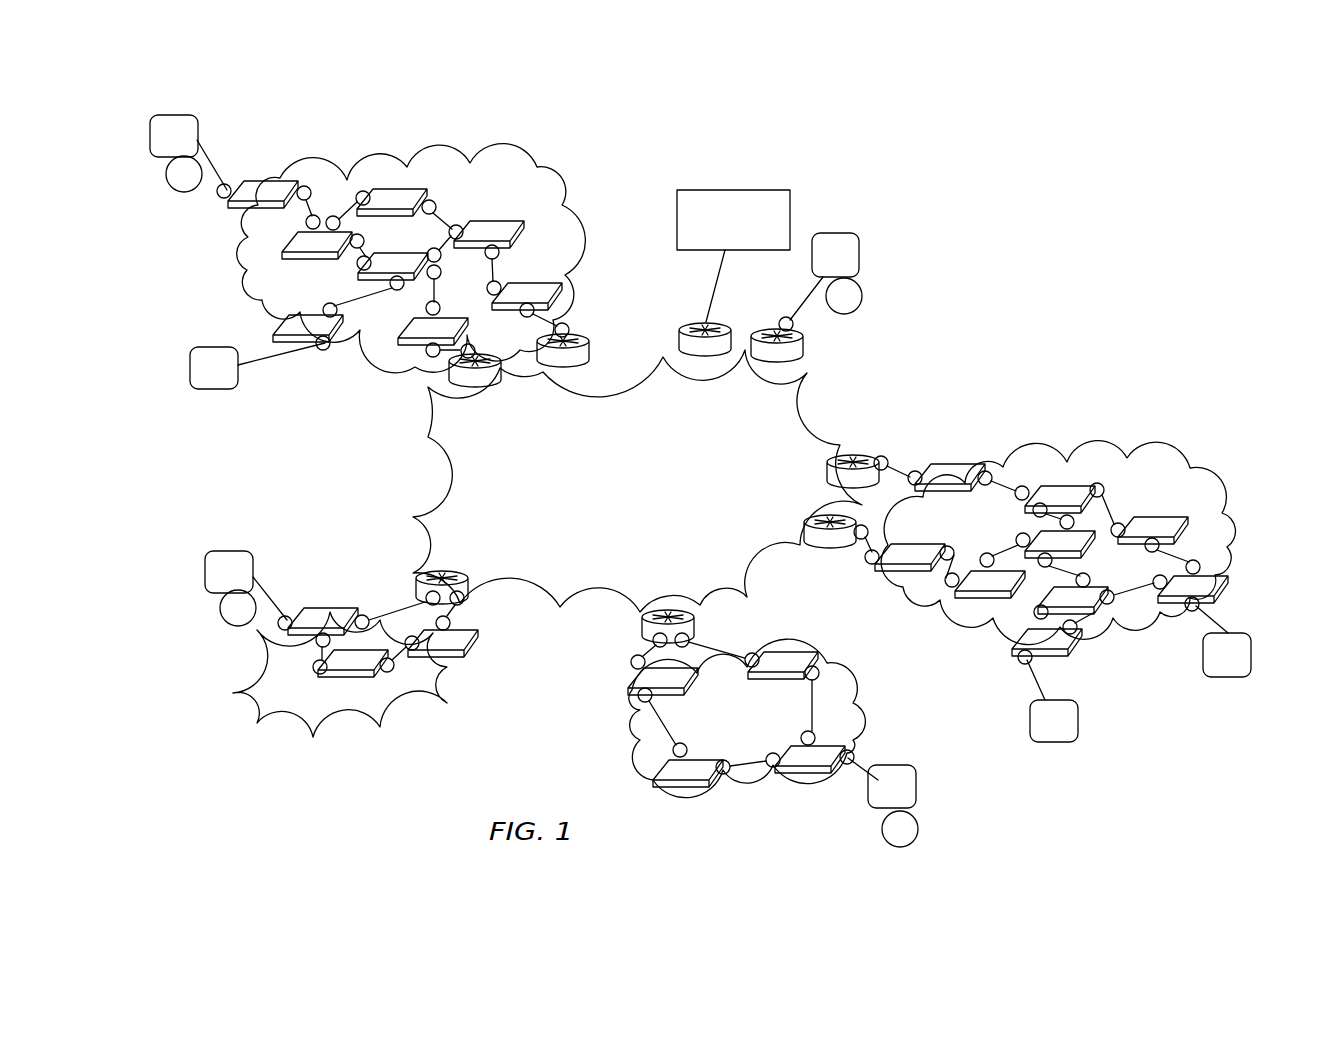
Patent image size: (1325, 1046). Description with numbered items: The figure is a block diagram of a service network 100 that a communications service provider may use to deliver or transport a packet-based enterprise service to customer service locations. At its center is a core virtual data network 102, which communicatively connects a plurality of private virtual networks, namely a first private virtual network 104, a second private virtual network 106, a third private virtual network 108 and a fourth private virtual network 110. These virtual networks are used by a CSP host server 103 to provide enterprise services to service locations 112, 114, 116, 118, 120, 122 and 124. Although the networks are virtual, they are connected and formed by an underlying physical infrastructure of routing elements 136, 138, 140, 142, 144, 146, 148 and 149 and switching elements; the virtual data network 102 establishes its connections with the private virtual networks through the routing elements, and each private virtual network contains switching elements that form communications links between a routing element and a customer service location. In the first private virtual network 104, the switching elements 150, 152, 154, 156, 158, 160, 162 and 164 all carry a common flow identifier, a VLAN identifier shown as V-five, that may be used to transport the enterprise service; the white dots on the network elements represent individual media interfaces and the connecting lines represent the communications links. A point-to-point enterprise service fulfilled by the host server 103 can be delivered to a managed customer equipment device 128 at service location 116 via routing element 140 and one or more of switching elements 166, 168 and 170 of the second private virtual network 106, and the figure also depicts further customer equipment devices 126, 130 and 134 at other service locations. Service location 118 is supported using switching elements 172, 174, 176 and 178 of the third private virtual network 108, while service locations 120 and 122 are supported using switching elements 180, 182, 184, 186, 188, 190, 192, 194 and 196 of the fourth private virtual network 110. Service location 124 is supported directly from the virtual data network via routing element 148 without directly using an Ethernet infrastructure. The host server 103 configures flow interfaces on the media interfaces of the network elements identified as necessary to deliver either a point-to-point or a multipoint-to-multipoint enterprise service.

The service network 100 is at (1026, 207).
The core virtual data network 102 is at (840, 380).
The CSP host server 103 is at (770, 190).
The private virtual network 104 is at (560, 170).
The private virtual network 106 is at (300, 752).
The private virtual network 108 is at (865, 693).
The private virtual network 110 is at (1180, 452).
The service location 112 is at (185, 118).
The service location 114 is at (214, 390).
The service location 116 is at (244, 552).
The service location 118 is at (916, 787).
The service location 120 is at (1060, 742).
The service location 122 is at (1240, 677).
The service location 124 is at (859, 266).
The customer edge device 126 is at (180, 192).
The managed customer equipment (CE) device 128 is at (225, 622).
The customer edge device 130 is at (912, 844).
The customer edge device 134 is at (863, 297).
The routing element 136 is at (582, 338).
The routing element 138 is at (452, 372).
The routing element 140 is at (418, 590).
The routing element 142 is at (696, 616).
The routing element 144 is at (838, 548).
The routing element 146 is at (868, 455).
The routing element 148 is at (804, 340).
The routing element 149 is at (722, 326).
The switching element 150 is at (565, 290).
The switching element 152 is at (405, 345).
The switching element 154 is at (272, 326).
The switching element 156 is at (530, 226).
The switching element 158 is at (412, 188).
The switching element 160 is at (390, 284).
The switching element 162 is at (283, 252).
The switching element 164 is at (275, 182).
The switching element 166 is at (312, 608).
The switching element 168 is at (380, 680).
The switching element 170 is at (478, 648).
The switching element 172 is at (628, 684).
The switching element 174 is at (690, 788).
The switching element 176 is at (800, 650).
The switching element 178 is at (815, 774).
The switching element 180 is at (1082, 647).
The switching element 182 is at (1230, 590).
The switching element 184 is at (1190, 532).
The switching element 186 is at (1068, 484).
The switching element 188 is at (1032, 533).
The switching element 190 is at (962, 462).
The switching element 192 is at (985, 600).
The switching element 194 is at (905, 572).
The switching element 196 is at (1100, 607).